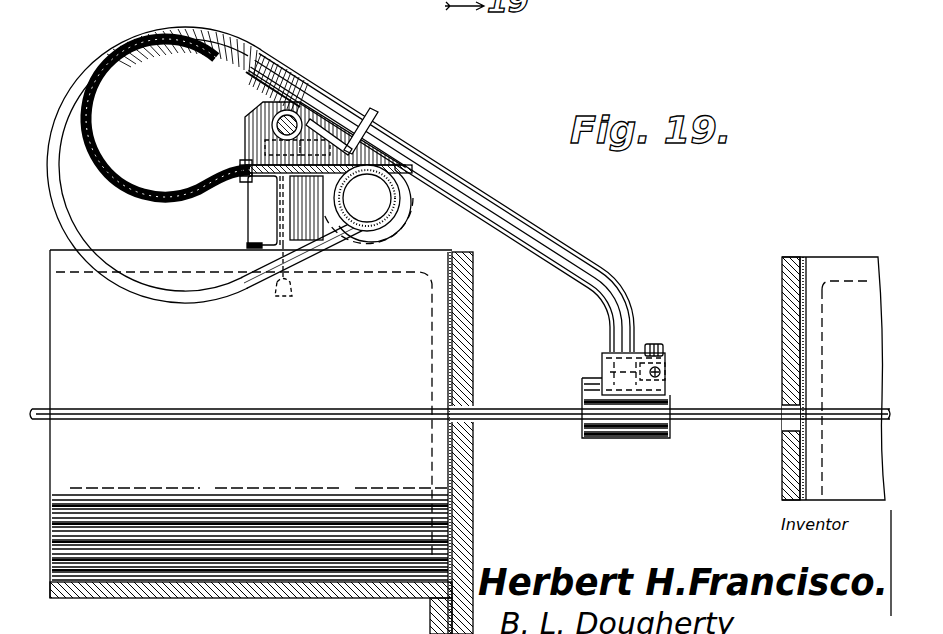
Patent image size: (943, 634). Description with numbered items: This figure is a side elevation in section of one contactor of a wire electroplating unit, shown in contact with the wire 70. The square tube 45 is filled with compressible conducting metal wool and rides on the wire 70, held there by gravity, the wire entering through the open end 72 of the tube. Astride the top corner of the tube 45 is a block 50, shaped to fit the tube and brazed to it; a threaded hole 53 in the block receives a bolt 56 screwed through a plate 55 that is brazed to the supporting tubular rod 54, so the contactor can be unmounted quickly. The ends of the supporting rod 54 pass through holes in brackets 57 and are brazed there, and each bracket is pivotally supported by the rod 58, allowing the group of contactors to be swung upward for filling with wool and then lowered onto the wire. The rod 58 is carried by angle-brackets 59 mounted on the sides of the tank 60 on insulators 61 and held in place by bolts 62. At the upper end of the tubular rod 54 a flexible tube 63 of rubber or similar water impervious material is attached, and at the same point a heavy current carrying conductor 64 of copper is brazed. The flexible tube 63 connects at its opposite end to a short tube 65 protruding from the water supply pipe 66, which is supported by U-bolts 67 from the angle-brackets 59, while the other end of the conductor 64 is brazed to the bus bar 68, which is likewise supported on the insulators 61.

The tube 45 is at (628, 438).
The block 50 is at (603, 370).
The threaded hole 53 is at (667, 368).
The supporting tubular rod 54 is at (625, 280).
The plate 55 is at (663, 354).
The bolt 56 is at (657, 343).
The bracket 57 is at (374, 112).
The rod 58 is at (272, 120).
The angle-bracket 59 is at (248, 138).
The tank 60 is at (791, 257).
The insulator 61 is at (248, 222).
The bolt 62 is at (245, 156).
The flexible tube 63 is at (99, 56).
The conductor 64 is at (92, 156).
The short tube 65 is at (390, 234).
The water supply pipe 66 is at (367, 220).
The U-bolt 67 is at (404, 197).
The bus bar 68 is at (243, 188).
The wire 70 is at (558, 423).
The open end 72 is at (588, 392).